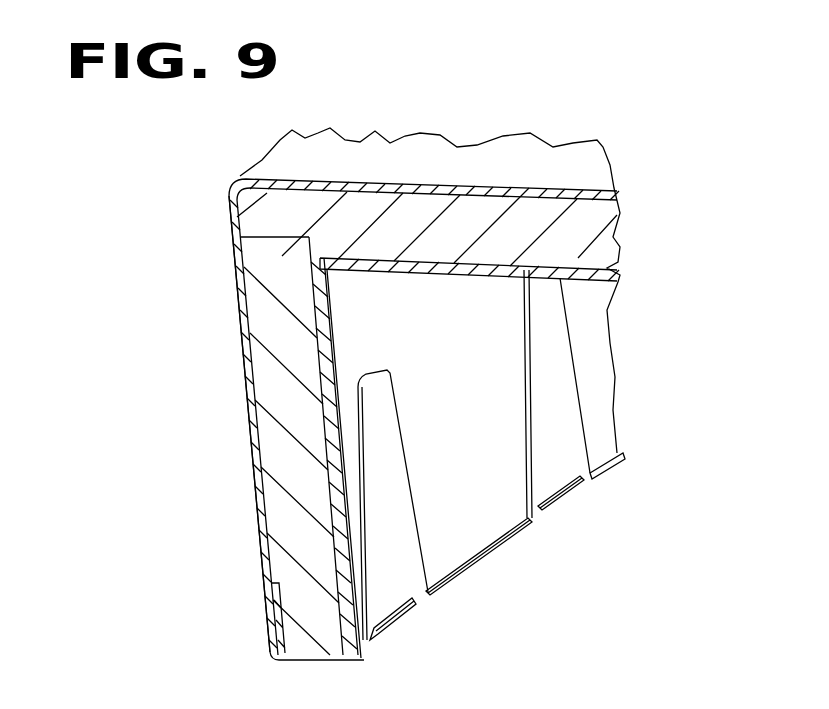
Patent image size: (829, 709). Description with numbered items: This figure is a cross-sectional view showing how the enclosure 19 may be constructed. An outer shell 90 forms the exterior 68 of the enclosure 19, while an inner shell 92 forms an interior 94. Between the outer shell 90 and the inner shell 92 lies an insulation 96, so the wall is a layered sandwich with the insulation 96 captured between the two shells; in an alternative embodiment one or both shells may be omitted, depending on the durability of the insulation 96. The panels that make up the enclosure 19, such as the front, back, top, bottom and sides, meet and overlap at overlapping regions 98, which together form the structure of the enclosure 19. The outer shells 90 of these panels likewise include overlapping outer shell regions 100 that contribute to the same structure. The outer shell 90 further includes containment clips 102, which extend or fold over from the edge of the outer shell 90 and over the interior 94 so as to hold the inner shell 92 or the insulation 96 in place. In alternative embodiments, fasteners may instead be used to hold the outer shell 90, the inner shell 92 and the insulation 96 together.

The enclosure 19 is at (663, 145).
The exterior 68 is at (260, 508).
The outer shell 90 is at (520, 192).
The inner shell 92 is at (397, 272).
The interior 94 is at (468, 533).
The insulation 96 is at (355, 208).
The overlapping regions 98 is at (250, 240).
The overlapping outer shell regions 100 is at (252, 179).
The containment clips 102 is at (387, 453).